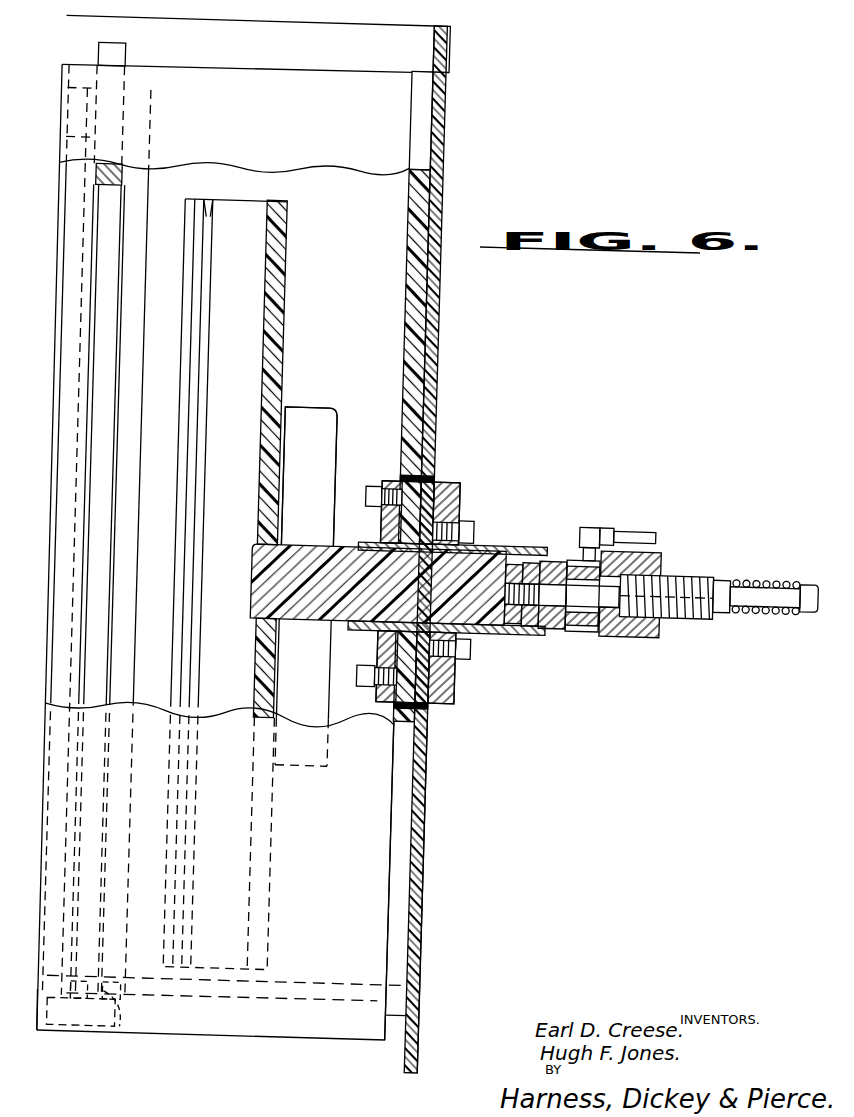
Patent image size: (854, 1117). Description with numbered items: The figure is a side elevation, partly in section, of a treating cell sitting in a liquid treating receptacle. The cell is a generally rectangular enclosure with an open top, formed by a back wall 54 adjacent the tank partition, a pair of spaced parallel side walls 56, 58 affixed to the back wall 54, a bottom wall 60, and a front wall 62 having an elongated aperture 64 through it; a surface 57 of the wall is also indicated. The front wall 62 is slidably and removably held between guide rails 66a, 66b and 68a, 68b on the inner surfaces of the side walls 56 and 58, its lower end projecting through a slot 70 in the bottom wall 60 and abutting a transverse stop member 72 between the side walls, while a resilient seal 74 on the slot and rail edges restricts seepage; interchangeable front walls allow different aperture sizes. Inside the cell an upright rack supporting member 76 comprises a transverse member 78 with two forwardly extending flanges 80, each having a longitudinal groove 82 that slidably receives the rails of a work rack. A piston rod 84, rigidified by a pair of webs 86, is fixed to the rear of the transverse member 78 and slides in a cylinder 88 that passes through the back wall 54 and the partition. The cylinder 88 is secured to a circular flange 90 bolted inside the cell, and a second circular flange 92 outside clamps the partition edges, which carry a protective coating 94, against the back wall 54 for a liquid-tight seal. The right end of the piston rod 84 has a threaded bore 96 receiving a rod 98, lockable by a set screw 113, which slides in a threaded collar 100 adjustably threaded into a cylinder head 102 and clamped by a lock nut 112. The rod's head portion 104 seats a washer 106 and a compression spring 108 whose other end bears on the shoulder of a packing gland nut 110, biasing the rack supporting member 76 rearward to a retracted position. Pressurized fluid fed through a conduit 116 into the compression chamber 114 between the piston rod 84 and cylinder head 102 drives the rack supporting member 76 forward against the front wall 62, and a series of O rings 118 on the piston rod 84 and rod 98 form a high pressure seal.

The back wall 54 is at (402, 767).
The side wall 56 is at (372, 277).
The wall inner surface 57 is at (423, 827).
The side wall 58 is at (295, 872).
The bottom wall 60 is at (243, 980).
The front wall 62 is at (128, 52).
The elongated aperture 64 is at (107, 212).
The guide rail 66a is at (68, 367).
The guide rail 66b is at (127, 405).
The guide rail 68a is at (155, 800).
The guide rail 68b is at (158, 828).
The slot 70 is at (73, 1033).
The transverse stop member 72 is at (53, 1033).
The resilient gasket or seal 74 is at (83, 512).
The rack supporting member 76 is at (300, 387).
The transverse member 78 is at (278, 230).
The flange 80 is at (235, 213).
The groove 82 is at (205, 262).
The piston rod 84 is at (253, 605).
The web 86 is at (318, 435).
The cylinder 88 is at (470, 548).
The circular flange 90 is at (384, 522).
The second circular flange 92 is at (453, 497).
The protective coating 94 is at (437, 475).
The threaded bore 96 is at (540, 573).
The rod 98 is at (573, 620).
The threaded collar 100 is at (680, 590).
The cylinder head 102 is at (630, 632).
The head portion 104 is at (805, 605).
The washer 106 is at (793, 587).
The compression spring 108 is at (770, 618).
The packing gland nut 110 is at (713, 615).
The lock nut 112 is at (657, 557).
The set screw 113 is at (529, 575).
The compression chamber 114 is at (575, 635).
The conduit 116 is at (587, 532).
The O ring 118 is at (330, 548).